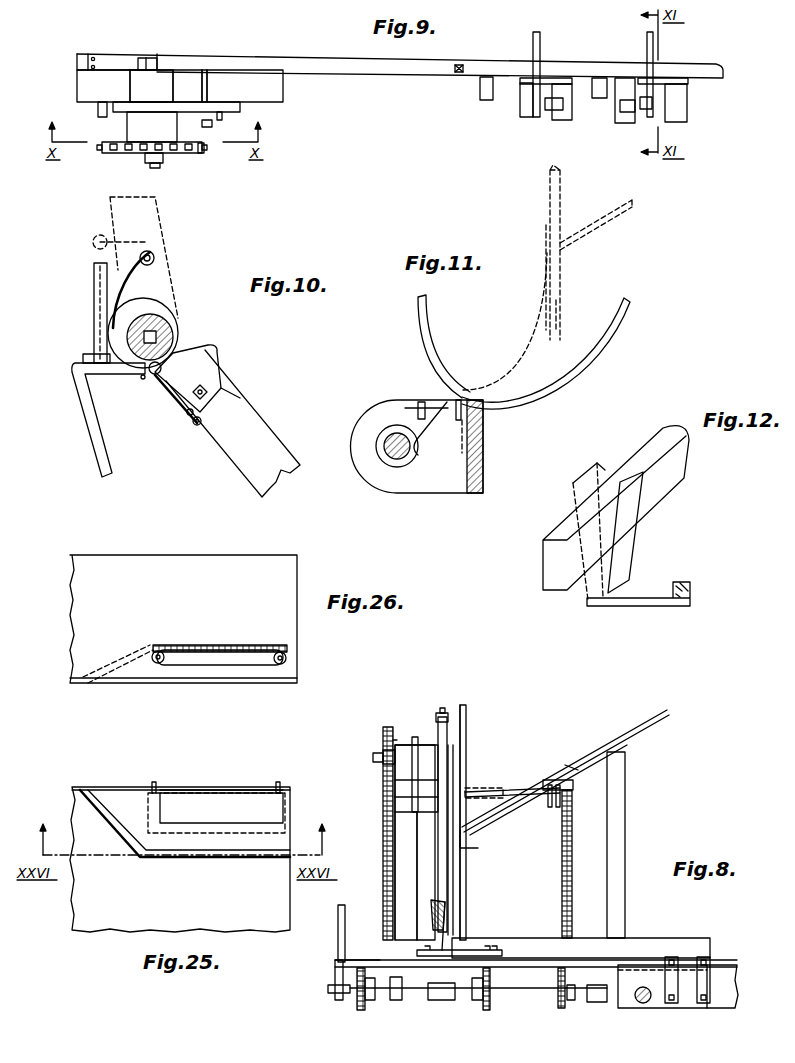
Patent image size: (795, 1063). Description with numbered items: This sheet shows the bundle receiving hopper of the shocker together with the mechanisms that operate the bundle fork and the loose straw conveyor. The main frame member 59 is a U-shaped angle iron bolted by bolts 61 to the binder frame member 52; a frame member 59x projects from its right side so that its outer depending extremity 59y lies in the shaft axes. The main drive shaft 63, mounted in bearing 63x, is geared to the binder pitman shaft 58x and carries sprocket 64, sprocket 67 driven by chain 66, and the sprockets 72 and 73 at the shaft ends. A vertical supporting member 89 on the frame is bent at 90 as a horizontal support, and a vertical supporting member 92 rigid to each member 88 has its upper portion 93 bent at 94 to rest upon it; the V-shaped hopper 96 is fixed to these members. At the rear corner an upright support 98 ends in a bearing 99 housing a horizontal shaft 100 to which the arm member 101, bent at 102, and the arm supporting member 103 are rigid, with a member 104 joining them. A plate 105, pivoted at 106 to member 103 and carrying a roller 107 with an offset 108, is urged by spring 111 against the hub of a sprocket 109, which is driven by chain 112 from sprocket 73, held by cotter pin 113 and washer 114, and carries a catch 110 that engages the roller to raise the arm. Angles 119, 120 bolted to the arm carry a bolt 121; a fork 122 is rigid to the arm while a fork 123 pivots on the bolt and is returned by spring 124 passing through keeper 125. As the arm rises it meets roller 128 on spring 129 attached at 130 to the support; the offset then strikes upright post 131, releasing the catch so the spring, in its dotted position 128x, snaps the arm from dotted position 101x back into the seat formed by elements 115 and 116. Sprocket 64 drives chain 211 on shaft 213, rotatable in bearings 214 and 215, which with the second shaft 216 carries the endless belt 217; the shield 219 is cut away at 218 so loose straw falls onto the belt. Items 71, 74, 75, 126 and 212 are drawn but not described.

In FIG. 8, the binder frame member 52 is at (722, 986).
In FIG. 8, the pitman shaft 58x is at (645, 1005).
In FIG. 8, the main frame member 59 is at (662, 950).
In FIG. 8, the frame member 59x is at (370, 963).
In FIG. 8, the outer depending extremity 59y is at (335, 975).
In FIG. 8, the bolt 61 is at (671, 1004).
In FIG. 8, the main drive shaft 63 is at (578, 1002).
In FIG. 8, the bearing 63x is at (600, 1003).
In FIG. 8, the sprocket 64 is at (560, 1008).
In FIG. 8, the chain 66 is at (490, 1005).
In FIG. 8, the sprocket 67 is at (479, 1010).
In FIG. 8, the coupling 71 is at (442, 1001).
In FIG. 8, the sprocket 72 is at (358, 1010).
In FIG. 8, the sprocket 73 is at (400, 1000).
In FIG. 8, the bolt 74 is at (330, 993).
In FIG. 8, the post 75 is at (338, 932).
In FIG. 11, the member 88 is at (536, 252).
In FIG. 8, the member 88 is at (458, 878).
In FIG. 8, the vertical supporting member 89 is at (617, 827).
In FIG. 8, the horizontal supporting member 90 is at (627, 743).
In FIG. 11, the vertical supporting member 92 is at (560, 300).
In FIG. 8, the vertical supporting member 92 is at (466, 891).
In FIG. 8, the upper portion 93 is at (577, 763).
In FIG. 8, the bend 94 is at (475, 841).
In FIG. 11, the bundle receiving hopper 96 is at (563, 208).
In FIG. 26, the bundle receiving hopper 96 is at (183, 619).
In FIG. 25, the bundle receiving hopper 96 is at (127, 785).
In FIG. 8, the bundle receiving hopper 96 is at (466, 733).
In FIG. 9, the upright support 98 is at (77, 88).
In FIG. 10, the upright support 98 is at (100, 450).
In FIG. 8, the upright support 98 is at (422, 860).
In FIG. 9, the bearing 99 is at (151, 86).
In FIG. 8, the bearing 99 is at (427, 745).
In FIG. 9, the horizontal shaft 100 is at (157, 168).
In FIG. 10, the horizontal shaft 100 is at (173, 323).
In FIG. 8, the horizontal shaft 100 is at (373, 757).
In FIG. 9, the arm member 101 is at (335, 66).
In FIG. 10, the arm member 101 is at (233, 423).
In FIG. 11, the arm member 101 is at (483, 447).
In FIG. 12, the arm member 101 is at (616, 508).
In FIG. 8, the arm member 101 is at (440, 873).
In FIG. 10, the dotted position of arm member 101x is at (110, 207).
In FIG. 9, the bend 102 is at (459, 73).
In FIG. 9, the arm supporting member 103 is at (240, 108).
In FIG. 10, the arm supporting member 103 is at (230, 398).
In FIG. 9, the member 104 is at (207, 82).
In FIG. 8, the member 104 is at (406, 876).
In FIG. 9, the plate 105 is at (185, 113).
In FIG. 10, the plate 105 is at (179, 367).
In FIG. 8, the plate 105 is at (410, 780).
In FIG. 9, the pivot 106 is at (209, 127).
In FIG. 10, the pivot 106 is at (208, 390).
In FIG. 10, the roller 107 is at (160, 380).
In FIG. 10, the offset 108 is at (108, 298).
In FIG. 9, the sprocket 109 is at (202, 154).
In FIG. 8, the sprocket 109 is at (397, 745).
In FIG. 10, the catch 110 is at (143, 380).
In FIG. 10, the spring 111 is at (195, 427).
In FIG. 8, the chain 112 is at (387, 843).
In FIG. 9, the cotter pin 113 is at (148, 163).
In FIG. 9, the washer 114 is at (140, 153).
In FIG. 12, the seat element 115 is at (583, 597).
In FIG. 8, the seat element 115 is at (433, 930).
In FIG. 12, the seat element 116 is at (620, 564).
In FIG. 8, the seat element 116 is at (447, 947).
In FIG. 9, the angle 119 is at (515, 118).
In FIG. 11, the angle 119 is at (436, 483).
In FIG. 9, the angle 120 is at (553, 118).
In FIG. 9, the bolt 121 is at (627, 112).
In FIG. 11, the bolt 121 is at (392, 450).
In FIG. 9, the fork 122 is at (483, 98).
In FIG. 11, the fork 122 is at (440, 353).
In FIG. 11, the fork 123 is at (537, 310).
In FIG. 11, the spring 124 is at (434, 439).
In FIG. 11, the keeper 125 is at (421, 402).
In FIG. 11, the bar 126 is at (413, 403).
In FIG. 9, the roller 128 is at (152, 62).
In FIG. 10, the roller 128 is at (153, 256).
In FIG. 8, the roller 128 is at (442, 712).
In FIG. 10, the dotted position of roller 128x is at (93, 241).
In FIG. 9, the spring 129 is at (123, 60).
In FIG. 10, the spring 129 is at (167, 268).
In FIG. 9, the attachment point 130 is at (93, 56).
In FIG. 10, the attachment point 130 is at (90, 353).
In FIG. 9, the upright post 131 is at (98, 110).
In FIG. 10, the upright post 131 is at (94, 284).
In FIG. 8, the chain 211 is at (568, 867).
In FIG. 8, the bolt 212 is at (553, 808).
In FIG. 26, the shaft 213 is at (158, 665).
In FIG. 25, the shaft 213 is at (157, 782).
In FIG. 8, the shaft 213 is at (530, 802).
In FIG. 8, the bearing 214 is at (558, 780).
In FIG. 25, the bearing 215 is at (167, 787).
In FIG. 26, the second shaft 216 is at (290, 658).
In FIG. 25, the second shaft 216 is at (280, 800).
In FIG. 26, the endless belt 217 is at (232, 668).
In FIG. 25, the endless belt 217 is at (221, 808).
In FIG. 8, the endless belt 217 is at (498, 787).
In FIG. 25, the cut away 218 is at (170, 823).
In FIG. 26, the shield 219 is at (187, 645).
In FIG. 25, the shield 219 is at (251, 846).